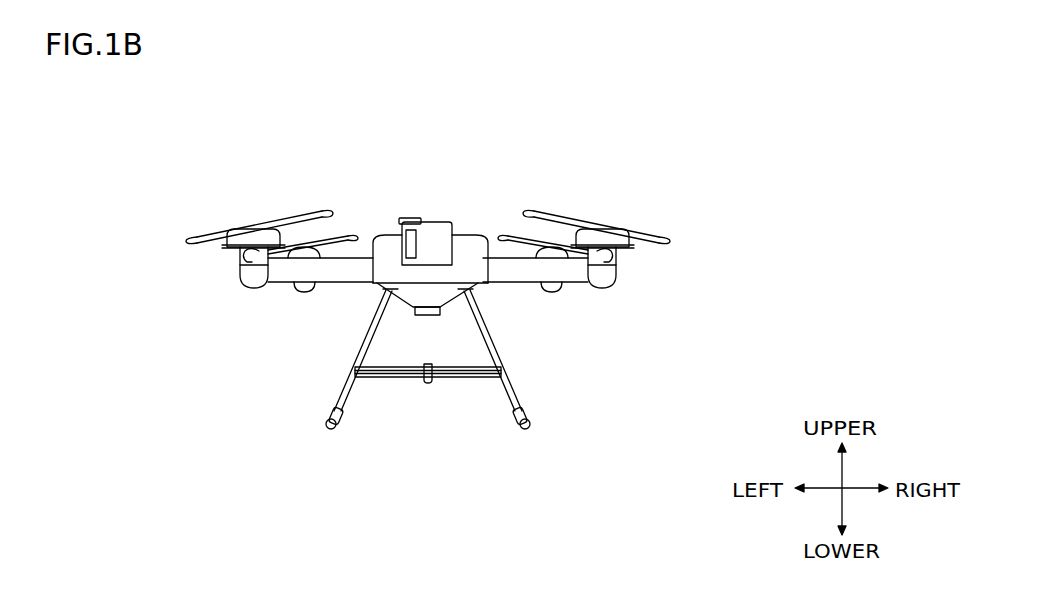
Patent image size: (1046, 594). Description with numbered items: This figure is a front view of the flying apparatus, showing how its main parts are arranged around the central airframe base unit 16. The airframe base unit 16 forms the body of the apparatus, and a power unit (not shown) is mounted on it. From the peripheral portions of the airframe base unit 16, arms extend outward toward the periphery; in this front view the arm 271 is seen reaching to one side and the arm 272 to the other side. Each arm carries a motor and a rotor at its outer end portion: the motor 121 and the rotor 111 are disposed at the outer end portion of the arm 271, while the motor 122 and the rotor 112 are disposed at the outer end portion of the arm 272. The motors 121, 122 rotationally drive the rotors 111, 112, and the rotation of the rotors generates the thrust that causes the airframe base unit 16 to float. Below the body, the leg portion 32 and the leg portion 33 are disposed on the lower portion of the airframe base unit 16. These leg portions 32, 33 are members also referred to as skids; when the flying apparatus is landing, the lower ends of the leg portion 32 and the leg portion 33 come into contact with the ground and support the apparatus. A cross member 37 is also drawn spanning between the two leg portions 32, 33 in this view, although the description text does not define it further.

The airframe base unit 16 is at (450, 218).
The rotor 111 is at (670, 240).
The rotor 112 is at (186, 241).
The motor 121 is at (632, 245).
The motor 122 is at (232, 244).
The arm 271 is at (528, 286).
The arm 272 is at (330, 286).
The leg portion 32 is at (506, 392).
The leg portion 33 is at (351, 392).
The cross bar 37 is at (468, 380).